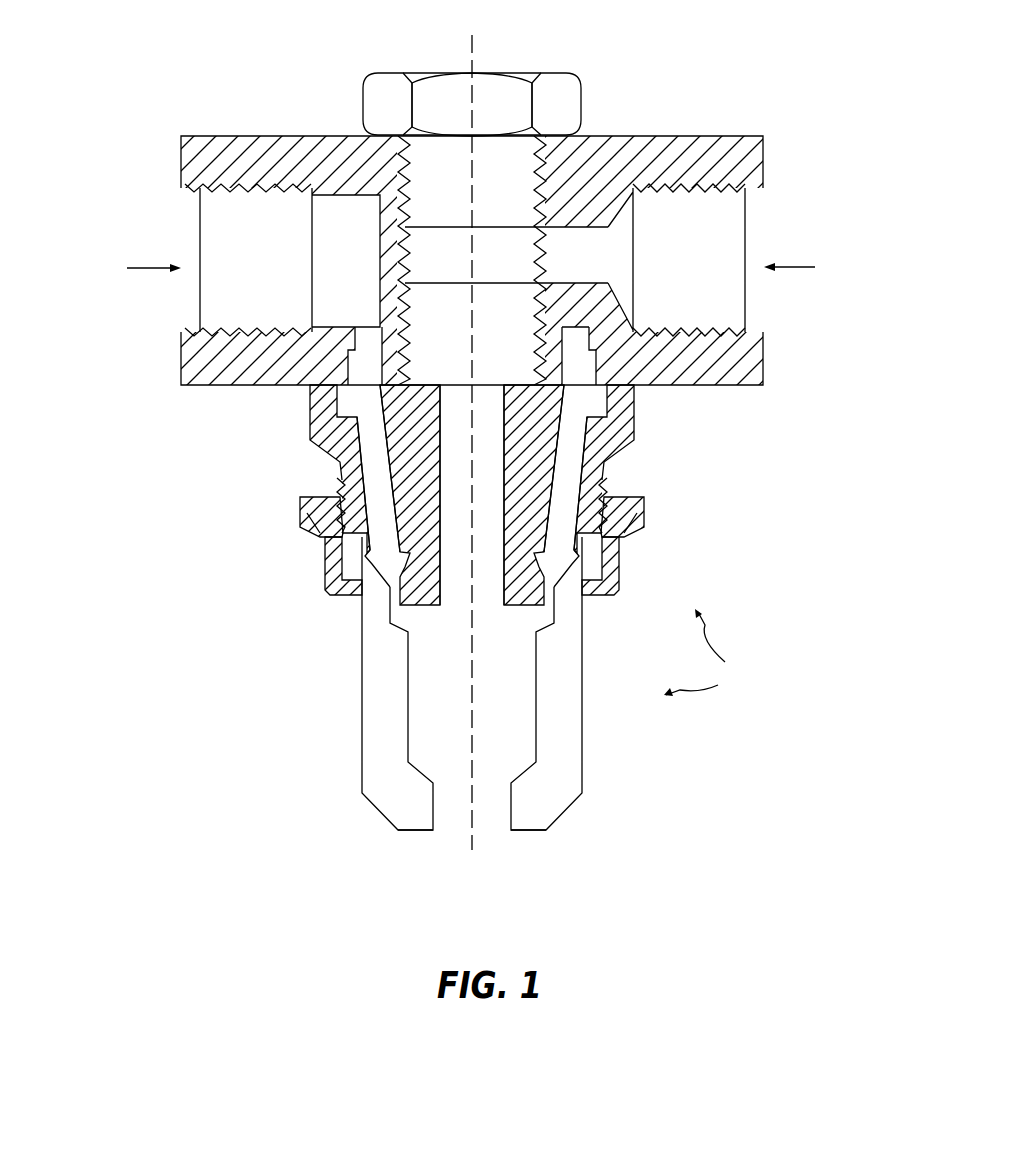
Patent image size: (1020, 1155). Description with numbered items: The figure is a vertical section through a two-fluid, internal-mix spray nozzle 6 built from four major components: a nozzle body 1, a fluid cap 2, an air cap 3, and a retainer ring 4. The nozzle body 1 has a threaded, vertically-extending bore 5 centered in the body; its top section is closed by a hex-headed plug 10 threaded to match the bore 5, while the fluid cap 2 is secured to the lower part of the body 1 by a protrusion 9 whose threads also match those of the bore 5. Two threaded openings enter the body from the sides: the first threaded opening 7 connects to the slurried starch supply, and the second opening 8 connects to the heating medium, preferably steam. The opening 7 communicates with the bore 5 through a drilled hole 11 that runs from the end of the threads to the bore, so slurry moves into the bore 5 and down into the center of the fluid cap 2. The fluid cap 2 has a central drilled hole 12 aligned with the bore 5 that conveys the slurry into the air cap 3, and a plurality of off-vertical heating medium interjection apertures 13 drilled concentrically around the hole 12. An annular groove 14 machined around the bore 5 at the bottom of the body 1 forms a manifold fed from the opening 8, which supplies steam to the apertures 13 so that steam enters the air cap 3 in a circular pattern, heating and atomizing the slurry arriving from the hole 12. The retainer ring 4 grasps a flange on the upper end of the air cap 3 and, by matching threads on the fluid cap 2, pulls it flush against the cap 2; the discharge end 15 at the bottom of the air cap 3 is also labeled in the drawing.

The nozzle body 1 is at (668, 136).
The fluid cap 2 is at (310, 440).
The air cap 3 is at (362, 741).
The retainer ring 4 is at (300, 511).
The threaded bore 5 is at (460, 190).
The two-fluid internal-mix nozzle 6 is at (702, 652).
The first threaded opening 7 is at (763, 208).
The second threaded opening 8 is at (181, 227).
The protrusion 9 is at (540, 320).
The hex-headed plug 10 is at (485, 73).
The drilled hole 11 is at (593, 250).
The drilled hole 12 is at (457, 582).
The heating medium interjection apertures 13 is at (572, 470).
The annular groove 14 is at (357, 366).
The discharge outlet 15 is at (472, 832).